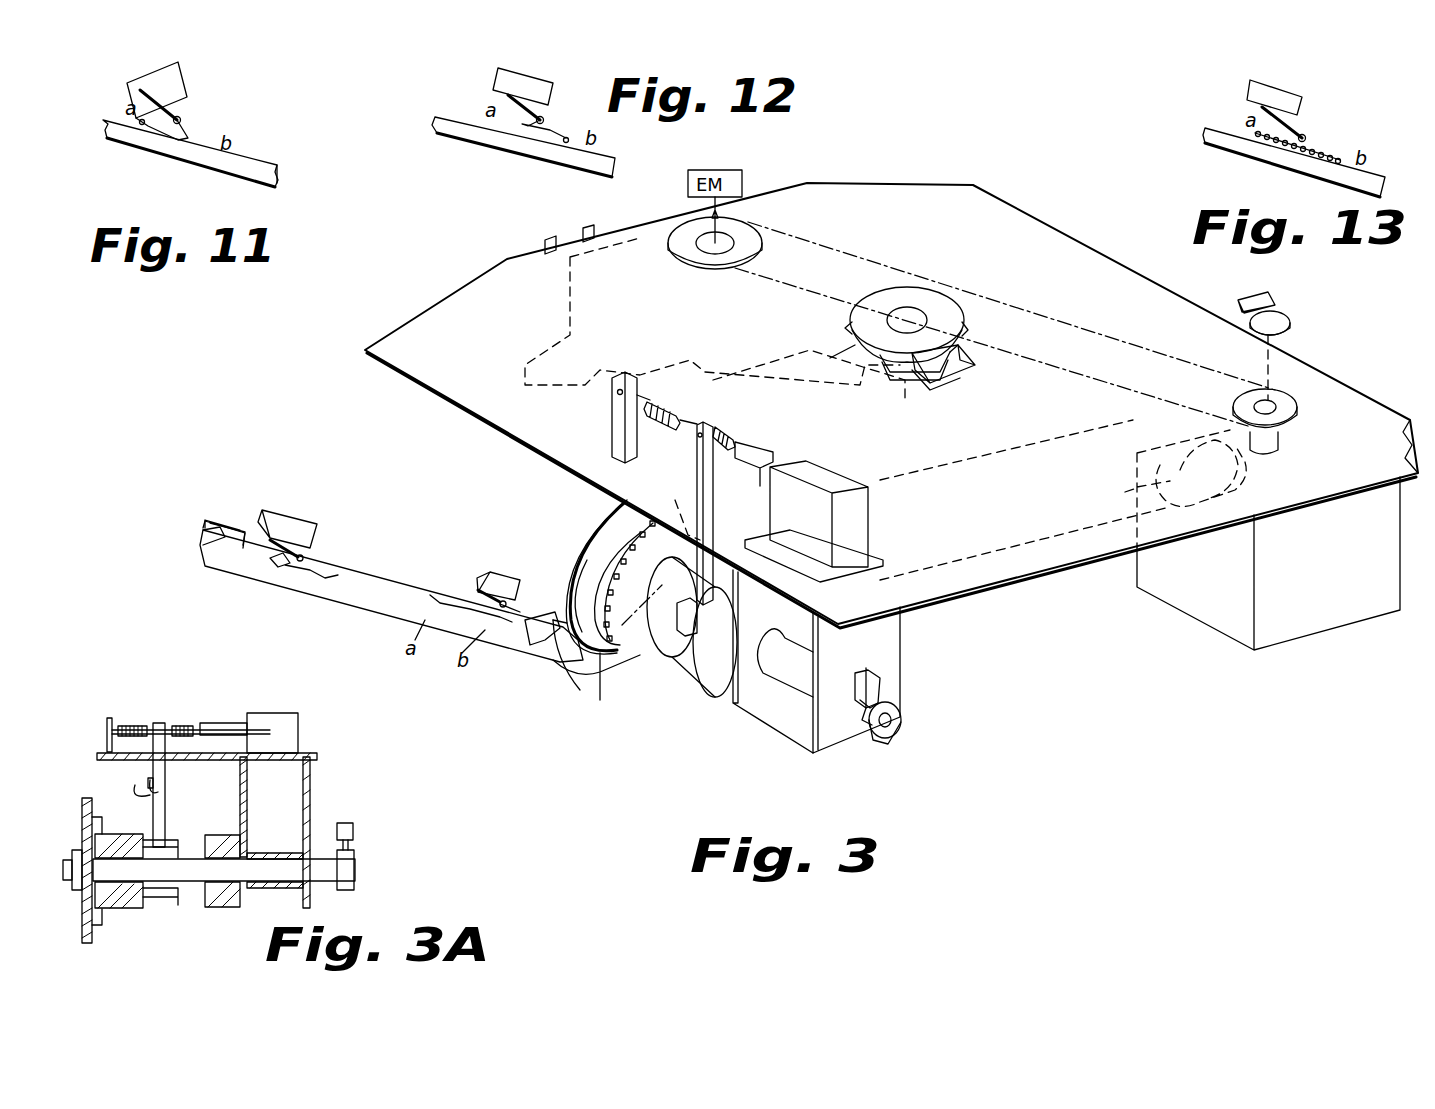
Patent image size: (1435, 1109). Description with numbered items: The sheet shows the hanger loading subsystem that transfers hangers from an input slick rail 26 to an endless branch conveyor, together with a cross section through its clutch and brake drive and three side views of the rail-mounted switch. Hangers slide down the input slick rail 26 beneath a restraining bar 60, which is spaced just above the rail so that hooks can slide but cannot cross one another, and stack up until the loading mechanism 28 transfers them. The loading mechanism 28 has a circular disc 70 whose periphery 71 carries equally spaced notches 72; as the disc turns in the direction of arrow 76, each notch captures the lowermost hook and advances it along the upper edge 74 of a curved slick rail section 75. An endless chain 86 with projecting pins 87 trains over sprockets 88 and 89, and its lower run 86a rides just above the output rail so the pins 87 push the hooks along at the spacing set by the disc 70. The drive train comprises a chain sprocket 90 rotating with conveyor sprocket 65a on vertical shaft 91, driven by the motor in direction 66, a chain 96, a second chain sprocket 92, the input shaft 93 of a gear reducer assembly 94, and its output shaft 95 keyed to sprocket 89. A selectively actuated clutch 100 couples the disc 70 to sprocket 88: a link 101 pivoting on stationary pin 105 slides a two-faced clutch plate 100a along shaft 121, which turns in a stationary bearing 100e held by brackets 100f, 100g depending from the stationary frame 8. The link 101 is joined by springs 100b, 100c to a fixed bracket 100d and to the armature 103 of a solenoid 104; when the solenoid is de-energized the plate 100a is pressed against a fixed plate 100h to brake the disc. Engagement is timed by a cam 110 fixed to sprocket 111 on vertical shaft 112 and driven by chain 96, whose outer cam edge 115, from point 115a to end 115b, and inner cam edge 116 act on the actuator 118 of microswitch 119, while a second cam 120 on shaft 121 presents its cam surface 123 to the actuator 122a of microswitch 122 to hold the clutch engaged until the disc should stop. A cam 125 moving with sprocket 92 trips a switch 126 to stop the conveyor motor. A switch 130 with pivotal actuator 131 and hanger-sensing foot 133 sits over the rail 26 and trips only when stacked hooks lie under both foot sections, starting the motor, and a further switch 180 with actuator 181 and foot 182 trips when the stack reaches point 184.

In FIG. 3, the stationary frame 8 is at (1060, 560).
In FIG. 3A, the stationary frame 8 is at (318, 750).
In FIG. 11, the input slick rail 26 is at (178, 153).
In FIG. 12, the input slick rail 26 is at (525, 155).
In FIG. 13, the input slick rail 26 is at (1225, 152).
In FIG. 3, the input slick rail 26 is at (350, 608).
In FIG. 3, the endless conveyor loading mechanism 28 is at (553, 698).
In FIG. 3, the restraining bar 60 is at (530, 640).
In FIG. 3, the conveyor sprocket 65a is at (567, 327).
In FIG. 3, the counterclockwise direction 66 is at (770, 368).
In FIG. 3, the circular disc 70 is at (612, 528).
In FIG. 3A, the circular disc 70 is at (82, 812).
In FIG. 3, the periphery of the disc 71 is at (577, 565).
In FIG. 3, the notches 72 is at (587, 545).
In FIG. 3, the upper edge of curved slick rail section 74 is at (596, 669).
In FIG. 3, the curved slick rail section 75 is at (580, 690).
In FIG. 3, the arrow (direction of disc rotation) 76 is at (590, 594).
In FIG. 3, the endless chain 86 is at (928, 468).
In FIG. 3, the lower run of the chain 86a is at (970, 556).
In FIG. 3A, the pins 87 is at (92, 935).
In FIG. 3, the sprocket 88 is at (659, 607).
In FIG. 3A, the sprocket 88 is at (102, 825).
In FIG. 3, the sprocket 89 is at (1165, 488).
In FIG. 3, the chain sprocket 90 is at (750, 245).
In FIG. 3, the vertical shaft 91 is at (702, 248).
In FIG. 3, the second chain sprocket 92 is at (1300, 410).
In FIG. 3, the vertical input shaft 93 is at (1280, 402).
In FIG. 3, the gear reducer assembly 94 is at (1268, 563).
In FIG. 3, the output shaft 95 is at (1232, 490).
In FIG. 3, the chain 96 is at (1100, 325).
In FIG. 3, the selectively actuated clutch 100 is at (640, 752).
In FIG. 3, the two-faced clutch plate 100a is at (710, 668).
In FIG. 3A, the two-faced clutch plate 100a is at (152, 900).
In FIG. 3, the spring 100b is at (663, 405).
In FIG. 3A, the spring 100b is at (123, 722).
In FIG. 3, the spring 100c is at (745, 435).
In FIG. 3A, the spring 100c is at (183, 722).
In FIG. 3, the fixed bracket 100d is at (612, 417).
In FIG. 3A, the fixed bracket 100d is at (107, 722).
In FIG. 3, the stationary bearing 100e is at (803, 690).
In FIG. 3A, the stationary bearing 100e is at (278, 888).
In FIG. 3, the bracket 100f is at (748, 703).
In FIG. 3A, the bracket 100f is at (247, 800).
In FIG. 3, the bracket 100g is at (818, 755).
In FIG. 3A, the bracket 100g is at (310, 795).
In FIG. 3, the fixed plate 100h is at (705, 700).
In FIG. 3A, the fixed plate 100h is at (212, 905).
In FIG. 3, the link 101 is at (697, 465).
In FIG. 3A, the link 101 is at (165, 812).
In FIG. 3, the armature 103 is at (790, 460).
In FIG. 3A, the armature 103 is at (218, 720).
In FIG. 3, the solenoid 104 is at (858, 505).
In FIG. 3A, the solenoid 104 is at (275, 712).
In FIG. 3, the stationary pin 105 is at (766, 529).
In FIG. 3A, the stationary pin 105 is at (132, 784).
In FIG. 3, the cam 110 is at (925, 312).
In FIG. 3, the sprocket 111 is at (865, 358).
In FIG. 3, the vertical shaft 112 is at (910, 318).
In FIG. 3, the outer cam edge 115 is at (888, 295).
In FIG. 3, the point of outer cam edge 115a is at (972, 332).
In FIG. 3, the end of cam edge 115b is at (848, 330).
In FIG. 3, the inner cam edge 116 is at (968, 365).
In FIG. 3, the movable actuator 118 is at (948, 375).
In FIG. 3, the microswitch 119 is at (925, 380).
In FIG. 3, the second cam 120 is at (900, 712).
In FIG. 3A, the second cam 120 is at (354, 858).
In FIG. 3, the shaft 121 is at (892, 724).
In FIG. 3A, the shaft 121 is at (268, 870).
In FIG. 3, the microswitch 122 is at (875, 672).
In FIG. 3A, the microswitch 122 is at (352, 825).
In FIG. 3, the movable actuator 122a is at (872, 706).
In FIG. 3A, the movable actuator 122a is at (355, 842).
In FIG. 3, the cam surface 123 is at (872, 728).
In FIG. 3, the cam 125 is at (1292, 322).
In FIG. 3, the switch 126 is at (1275, 295).
In FIG. 11, the switch 130 is at (176, 82).
In FIG. 12, the switch 130 is at (522, 80).
In FIG. 13, the switch 130 is at (1278, 92).
In FIG. 3, the switch 130 is at (495, 568).
In FIG. 11, the movable pivotal actuator 131 is at (182, 110).
In FIG. 12, the movable pivotal actuator 131 is at (545, 115).
In FIG. 13, the movable pivotal actuator 131 is at (1300, 128).
In FIG. 3, the movable pivotal actuator 131 is at (478, 575).
In FIG. 11, the horizontal hanger-sensing foot 133 is at (190, 133).
In FIG. 12, the horizontal hanger-sensing foot 133 is at (562, 134).
In FIG. 13, the horizontal hanger-sensing foot 133 is at (1318, 148).
In FIG. 3, the horizontal hanger-sensing foot 133 is at (465, 606).
In FIG. 3, the switch 180 is at (295, 532).
In FIG. 3, the pivotal actuator 181 is at (305, 555).
In FIG. 3, the pivotal foot 182 is at (308, 572).
In FIG. 3, the point 184 is at (255, 575).